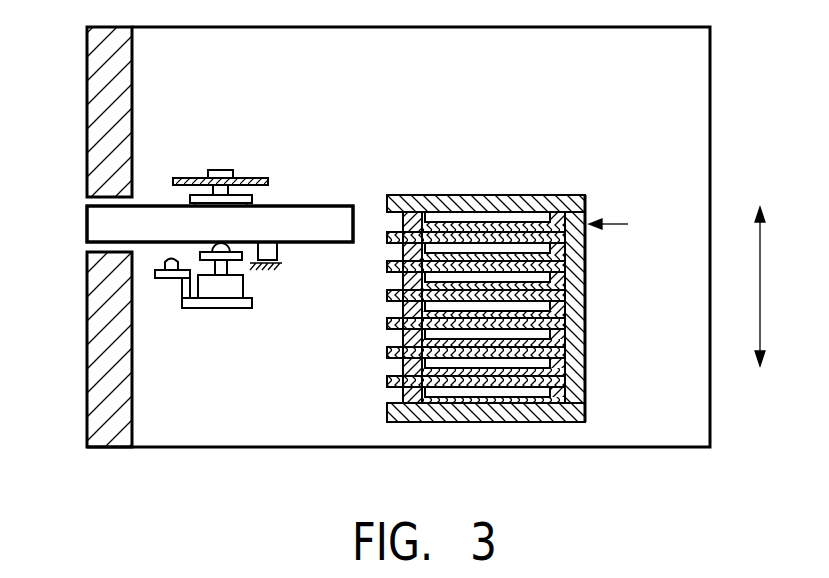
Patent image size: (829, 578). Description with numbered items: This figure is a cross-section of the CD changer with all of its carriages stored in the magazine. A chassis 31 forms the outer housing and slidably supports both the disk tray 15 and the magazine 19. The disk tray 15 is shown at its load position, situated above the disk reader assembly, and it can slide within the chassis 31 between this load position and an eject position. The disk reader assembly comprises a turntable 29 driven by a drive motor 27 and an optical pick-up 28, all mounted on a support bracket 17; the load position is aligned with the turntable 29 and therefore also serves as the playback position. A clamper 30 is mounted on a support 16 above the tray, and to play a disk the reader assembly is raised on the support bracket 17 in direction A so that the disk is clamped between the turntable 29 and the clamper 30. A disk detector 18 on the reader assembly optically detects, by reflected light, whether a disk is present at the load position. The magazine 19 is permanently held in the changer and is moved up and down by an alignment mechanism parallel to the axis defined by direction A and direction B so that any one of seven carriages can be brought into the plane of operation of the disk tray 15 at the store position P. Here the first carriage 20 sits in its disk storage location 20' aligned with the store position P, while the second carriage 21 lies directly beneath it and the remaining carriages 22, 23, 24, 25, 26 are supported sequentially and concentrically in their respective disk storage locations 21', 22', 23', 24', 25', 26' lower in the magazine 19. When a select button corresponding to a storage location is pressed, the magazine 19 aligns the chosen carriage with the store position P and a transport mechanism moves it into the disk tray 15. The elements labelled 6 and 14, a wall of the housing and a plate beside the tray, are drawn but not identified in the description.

The side wall 6 is at (92, 58).
The plate 14 is at (90, 233).
The disk tray 15 is at (311, 214).
The support 16 is at (253, 178).
The support bracket 17 is at (241, 303).
The disk detector 18 is at (278, 258).
The magazine 19 is at (463, 204).
The first carriage 20 is at (573, 293).
The disk storage location 20' is at (389, 285).
The second carriage 21 is at (518, 249).
The carriage 22 is at (518, 284).
The carriage 23 is at (518, 316).
The carriage 24 is at (518, 345).
The carriage 25 is at (518, 373).
The carriage 26 is at (518, 413).
The disk storage location 21' is at (451, 255).
The disk storage location 22' is at (451, 285).
The disk storage location 23' is at (431, 311).
The disk storage location 24' is at (451, 339).
The disk storage location 25' is at (454, 372).
The disk storage location 26' is at (455, 405).
The drive motor 27 is at (212, 292).
The optical pick-up 28 is at (168, 276).
The turntable 29 is at (241, 261).
The clamper 30 is at (212, 172).
The chassis 31 is at (704, 44).
The store position P is at (619, 223).
The direction A is at (761, 271).
The direction B is at (761, 384).